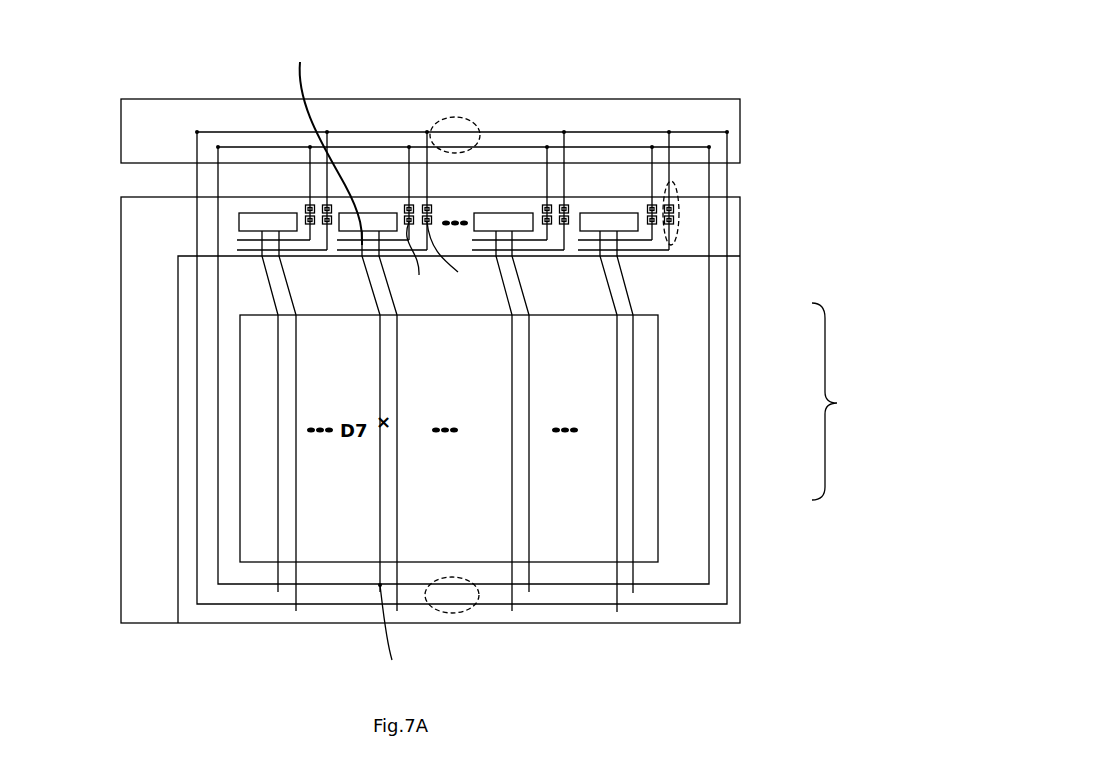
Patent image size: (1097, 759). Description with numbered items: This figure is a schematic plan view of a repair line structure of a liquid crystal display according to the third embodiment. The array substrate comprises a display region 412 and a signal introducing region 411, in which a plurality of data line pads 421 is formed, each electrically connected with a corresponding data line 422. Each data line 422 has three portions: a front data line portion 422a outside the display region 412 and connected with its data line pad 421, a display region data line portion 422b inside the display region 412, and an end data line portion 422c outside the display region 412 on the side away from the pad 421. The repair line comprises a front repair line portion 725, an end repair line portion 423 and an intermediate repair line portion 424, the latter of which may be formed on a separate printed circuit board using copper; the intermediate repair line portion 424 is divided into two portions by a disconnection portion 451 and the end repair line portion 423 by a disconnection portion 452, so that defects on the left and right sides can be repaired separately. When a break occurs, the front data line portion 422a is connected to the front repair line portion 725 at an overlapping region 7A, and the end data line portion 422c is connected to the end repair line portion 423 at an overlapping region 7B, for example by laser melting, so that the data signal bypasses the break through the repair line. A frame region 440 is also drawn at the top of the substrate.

The signal introducing region 411 is at (155, 251).
The display region 412 is at (267, 372).
The data line pad 421 is at (373, 222).
The data line 422 is at (842, 401).
The front data line portion 422a is at (368, 283).
The display region data line portion 422b is at (379, 356).
The end data line portion 422c is at (380, 570).
The end repair line portion 423 is at (218, 432).
The intermediate repair line portion 424 is at (257, 147).
The pad region 440 is at (725, 117).
The disconnection portion 451 is at (459, 113).
The disconnection portion 452 is at (452, 618).
The front repair line portion 725 is at (690, 220).
The overlapping region 7A is at (360, 167).
The overlapping region 7B is at (432, 455).